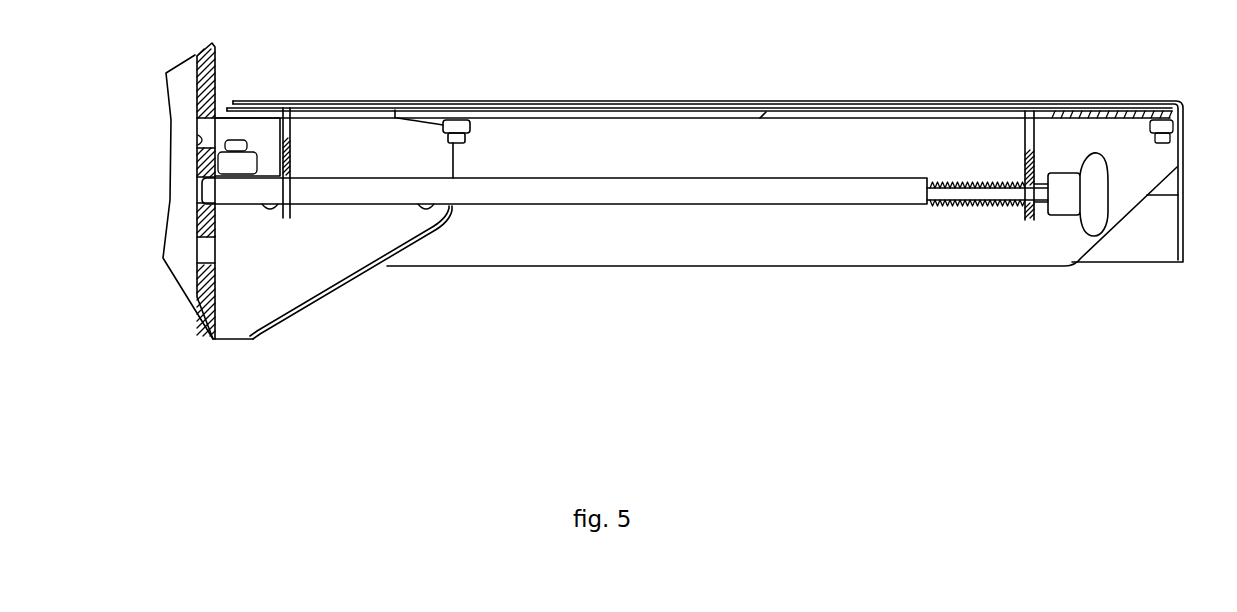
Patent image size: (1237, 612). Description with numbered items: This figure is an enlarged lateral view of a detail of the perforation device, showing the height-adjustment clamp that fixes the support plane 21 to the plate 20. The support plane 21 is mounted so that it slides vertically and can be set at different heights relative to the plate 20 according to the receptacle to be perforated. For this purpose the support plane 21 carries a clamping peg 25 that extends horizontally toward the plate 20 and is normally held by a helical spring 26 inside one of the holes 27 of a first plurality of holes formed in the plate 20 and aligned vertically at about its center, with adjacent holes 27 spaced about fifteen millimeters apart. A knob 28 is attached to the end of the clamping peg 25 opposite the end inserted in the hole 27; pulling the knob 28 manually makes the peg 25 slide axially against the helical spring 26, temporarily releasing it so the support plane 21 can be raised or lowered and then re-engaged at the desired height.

The plate 20 is at (197, 278).
The support plane 21 is at (1157, 120).
The clamping peg 25 is at (480, 192).
The helical spring 26 is at (970, 206).
The holes 27 is at (197, 73).
The knob 28 is at (1080, 197).